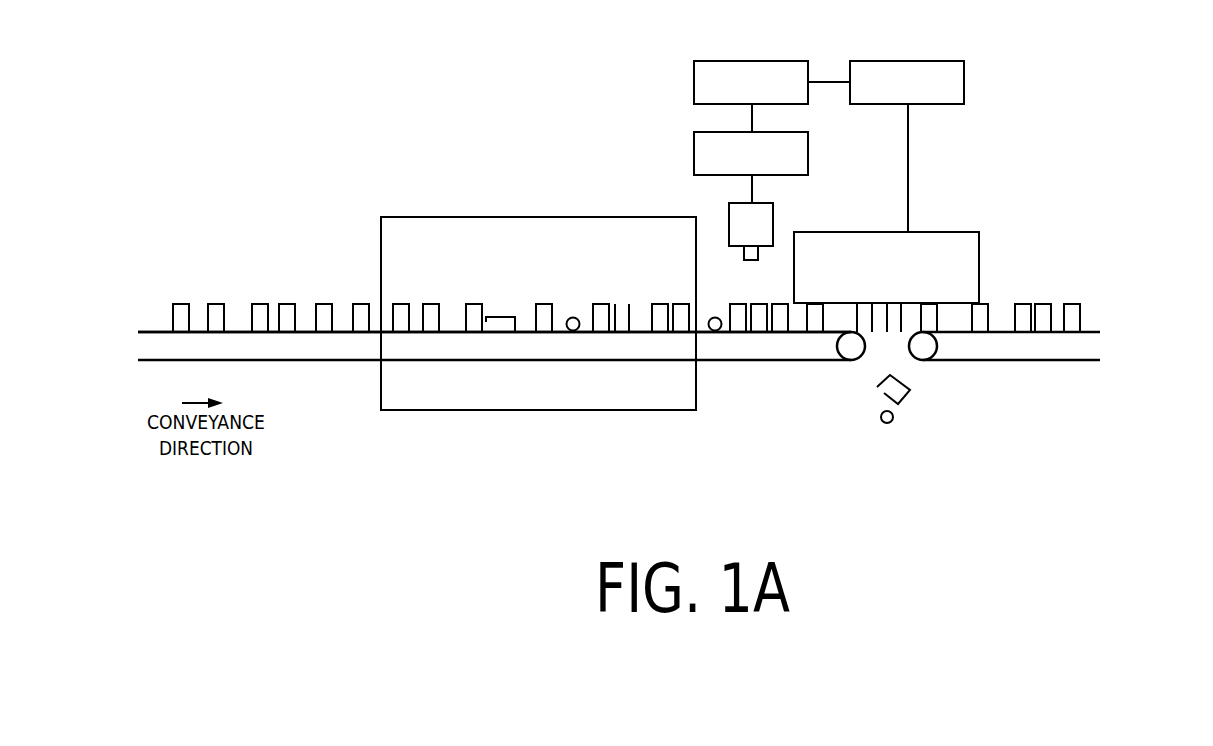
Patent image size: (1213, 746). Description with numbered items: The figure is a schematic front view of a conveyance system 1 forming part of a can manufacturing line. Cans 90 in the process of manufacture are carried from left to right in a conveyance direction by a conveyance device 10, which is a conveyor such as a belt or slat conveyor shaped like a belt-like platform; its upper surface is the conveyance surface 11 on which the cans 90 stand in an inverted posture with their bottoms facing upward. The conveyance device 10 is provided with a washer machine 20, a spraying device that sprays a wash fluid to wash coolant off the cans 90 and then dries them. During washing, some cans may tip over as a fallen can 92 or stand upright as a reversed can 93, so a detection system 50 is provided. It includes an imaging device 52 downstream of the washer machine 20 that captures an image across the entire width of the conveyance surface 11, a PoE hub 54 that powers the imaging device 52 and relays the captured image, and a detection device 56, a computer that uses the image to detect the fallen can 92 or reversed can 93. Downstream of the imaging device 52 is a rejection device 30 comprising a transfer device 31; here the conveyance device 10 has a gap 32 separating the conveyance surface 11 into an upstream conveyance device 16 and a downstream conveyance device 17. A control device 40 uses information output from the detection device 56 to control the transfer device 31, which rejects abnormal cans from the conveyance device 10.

The conveyance system 1 is at (1078, 124).
The conveyance device 10 is at (1116, 353).
The conveyance surface 11 is at (238, 332).
The upstream conveyance device 16 is at (778, 347).
The downstream conveyance device 17 is at (993, 347).
The washer machine 20 is at (483, 217).
The rejection device 30 is at (1005, 217).
The transfer device 31 is at (979, 253).
The gap 32 is at (903, 364).
The control device 40 is at (946, 59).
The detection system 50 is at (676, 97).
The imaging device 52 is at (773, 218).
The PoE hub 54 is at (810, 153).
The detection device 56 is at (791, 59).
The cans 90 is at (216, 304).
The fallen can 92 is at (500, 325).
The reversed can 93 is at (623, 332).